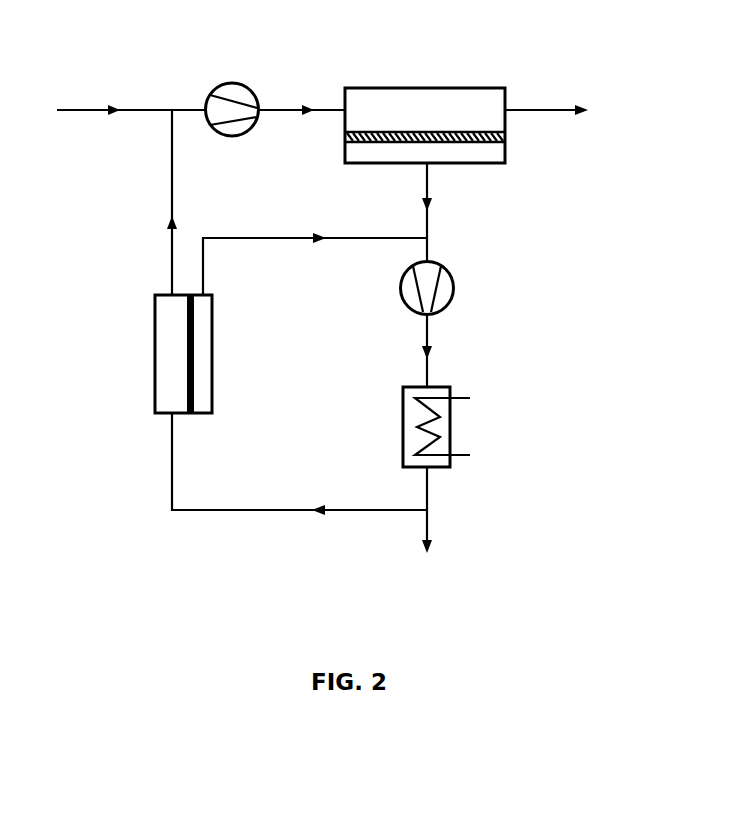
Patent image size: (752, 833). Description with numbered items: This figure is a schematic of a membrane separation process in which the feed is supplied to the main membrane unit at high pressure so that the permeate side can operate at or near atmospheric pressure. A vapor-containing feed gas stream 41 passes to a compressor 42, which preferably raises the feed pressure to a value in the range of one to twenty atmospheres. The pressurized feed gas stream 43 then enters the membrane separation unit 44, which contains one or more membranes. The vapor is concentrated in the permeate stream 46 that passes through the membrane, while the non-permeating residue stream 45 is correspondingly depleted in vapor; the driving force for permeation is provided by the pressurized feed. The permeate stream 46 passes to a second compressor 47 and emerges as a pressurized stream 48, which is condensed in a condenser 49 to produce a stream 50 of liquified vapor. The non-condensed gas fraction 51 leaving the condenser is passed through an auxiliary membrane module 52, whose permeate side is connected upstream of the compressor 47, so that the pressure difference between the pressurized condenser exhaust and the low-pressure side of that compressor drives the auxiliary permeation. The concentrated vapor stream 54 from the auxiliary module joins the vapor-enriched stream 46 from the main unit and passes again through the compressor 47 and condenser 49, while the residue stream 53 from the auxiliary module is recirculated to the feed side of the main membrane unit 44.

The vapor-containing feed gas stream 41 is at (131, 96).
The compressor 42 is at (235, 83).
The pressurized feed gas stream 43 is at (302, 91).
The membrane separation unit 44 is at (415, 88).
The residue stream 45 is at (565, 108).
The permeate stream 46 is at (443, 212).
The compressor 47 is at (453, 274).
The pressurized stream 48 is at (408, 351).
The condenser 49 is at (443, 387).
The stream of liquified vapor 50 is at (428, 530).
The non-condensed gas fraction 51 is at (299, 483).
The auxiliary membrane module 52 is at (156, 380).
The residue stream 53 is at (151, 202).
The concentrated vapor stream 54 is at (315, 249).